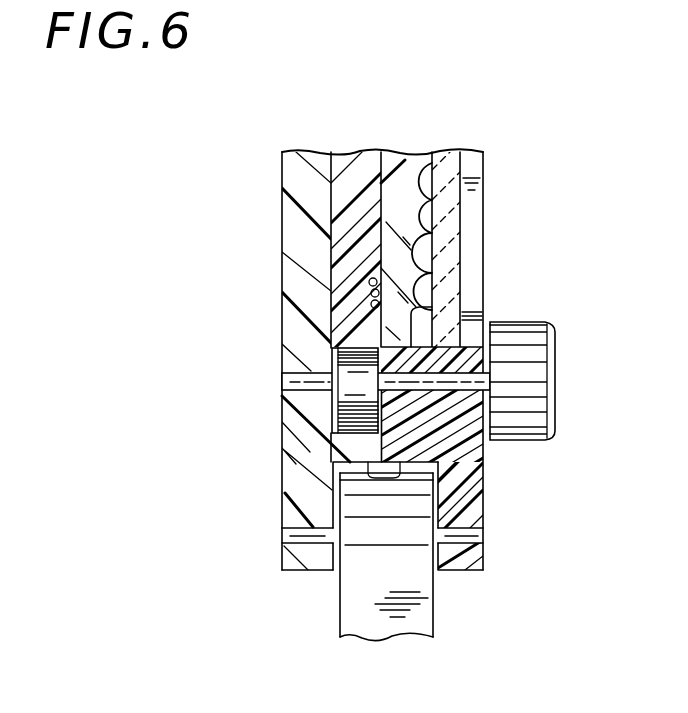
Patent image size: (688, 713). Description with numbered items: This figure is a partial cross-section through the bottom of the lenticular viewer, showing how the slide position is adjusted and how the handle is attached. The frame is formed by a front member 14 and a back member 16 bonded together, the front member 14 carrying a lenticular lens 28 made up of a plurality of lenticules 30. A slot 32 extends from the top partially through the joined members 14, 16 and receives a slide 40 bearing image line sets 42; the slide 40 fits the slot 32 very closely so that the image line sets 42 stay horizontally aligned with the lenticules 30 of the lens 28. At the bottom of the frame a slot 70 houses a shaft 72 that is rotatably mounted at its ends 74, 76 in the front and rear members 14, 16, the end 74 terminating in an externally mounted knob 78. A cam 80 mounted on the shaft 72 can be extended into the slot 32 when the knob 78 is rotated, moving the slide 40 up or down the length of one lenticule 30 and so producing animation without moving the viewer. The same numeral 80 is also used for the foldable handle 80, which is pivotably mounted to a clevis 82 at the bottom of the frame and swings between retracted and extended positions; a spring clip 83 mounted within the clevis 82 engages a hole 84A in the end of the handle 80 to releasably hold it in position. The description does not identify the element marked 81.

The front member 14 is at (487, 496).
The back member 16 is at (282, 171).
The lenticular lens 28 is at (400, 150).
The lenticules 30 is at (432, 300).
The slot 32 is at (333, 181).
The slide 40 is at (413, 160).
The image line sets 42 is at (368, 284).
The slot 70 is at (333, 401).
The shaft 72 is at (418, 372).
The shaft end 74 is at (490, 322).
The shaft end 76 is at (321, 368).
The knob 78 is at (555, 381).
The cam; foldable handle 80 is at (332, 313).
The block 81 is at (316, 569).
The clevis 82 is at (490, 534).
The spring clip 83 is at (335, 462).
The hole 84A is at (390, 474).